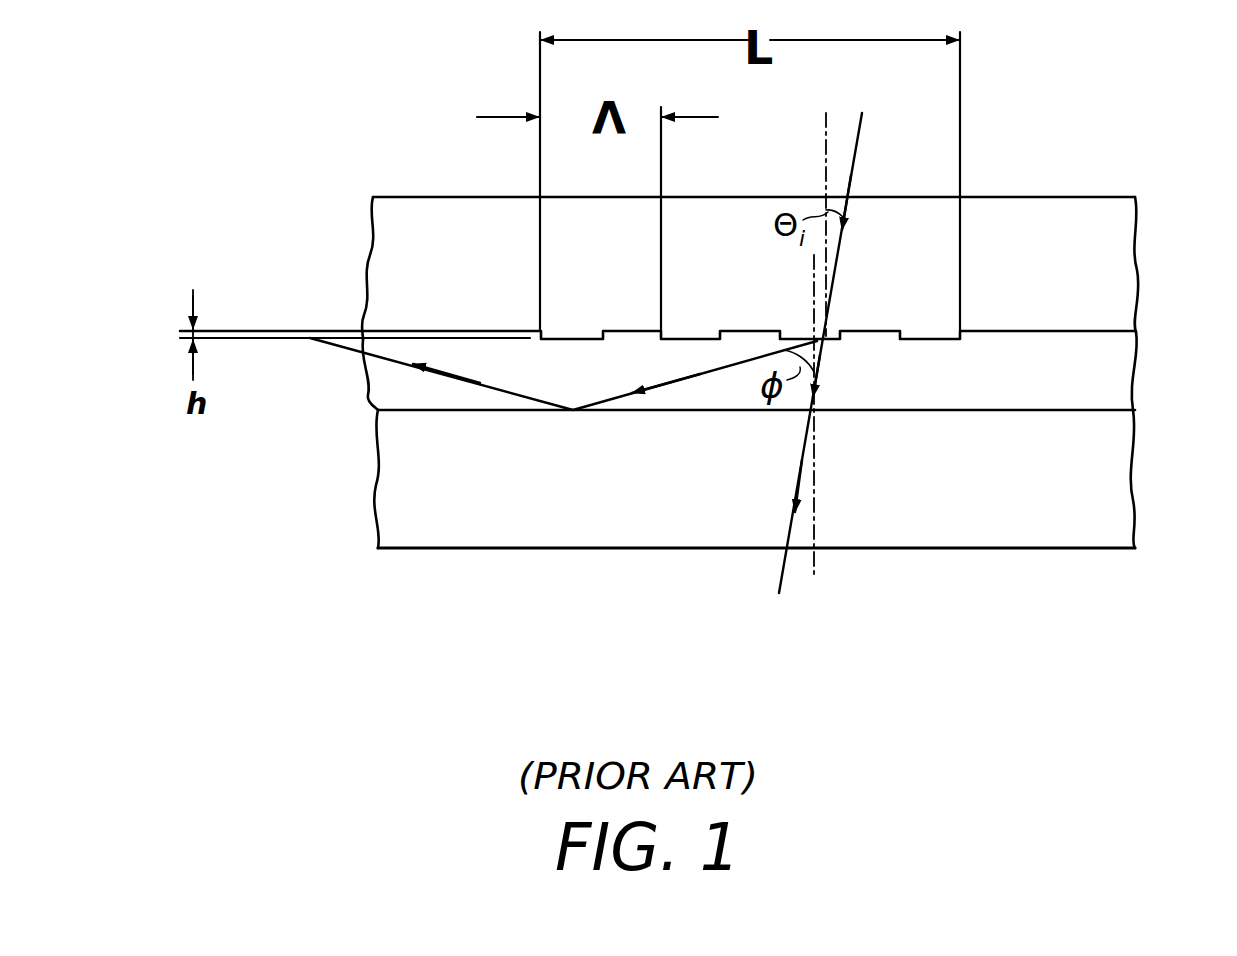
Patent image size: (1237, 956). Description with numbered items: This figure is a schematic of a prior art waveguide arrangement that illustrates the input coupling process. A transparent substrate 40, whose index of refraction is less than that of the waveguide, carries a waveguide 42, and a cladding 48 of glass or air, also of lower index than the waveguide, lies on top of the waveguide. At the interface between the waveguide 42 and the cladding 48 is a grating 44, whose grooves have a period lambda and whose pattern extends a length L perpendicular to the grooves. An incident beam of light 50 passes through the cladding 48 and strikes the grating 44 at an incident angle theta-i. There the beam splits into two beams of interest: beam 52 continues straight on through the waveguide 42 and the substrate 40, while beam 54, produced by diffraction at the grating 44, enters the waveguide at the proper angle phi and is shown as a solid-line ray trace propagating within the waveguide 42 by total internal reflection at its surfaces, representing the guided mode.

The transparent substrate 40 is at (1105, 515).
The waveguide 42 is at (1082, 376).
The grating 44 is at (880, 330).
The cladding layer 48 is at (1108, 262).
The beam of light 50 is at (860, 152).
The beam 52 is at (784, 580).
The beam 54 is at (690, 376).